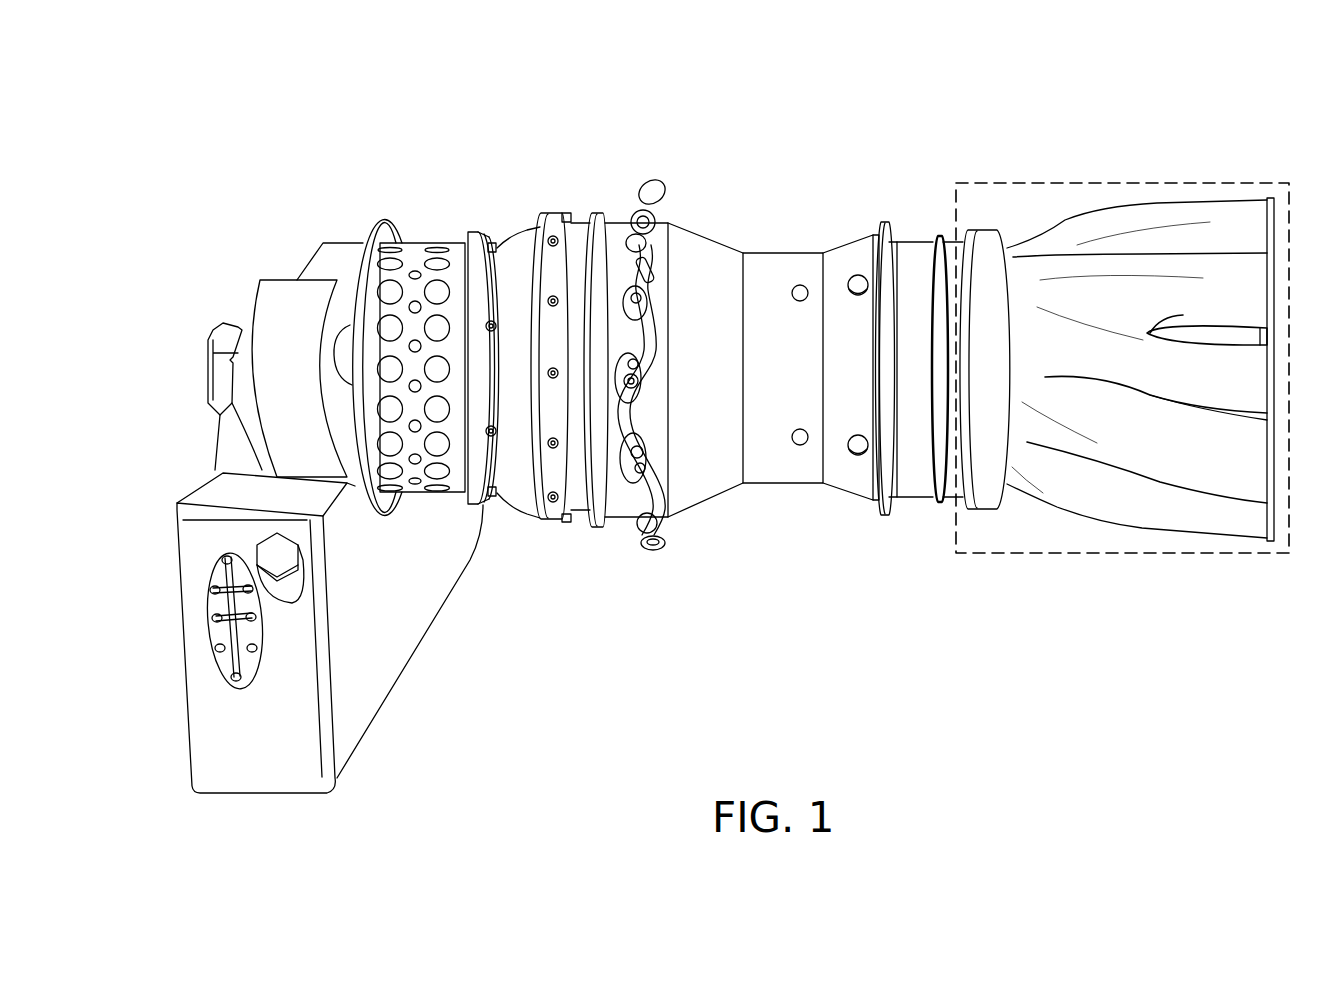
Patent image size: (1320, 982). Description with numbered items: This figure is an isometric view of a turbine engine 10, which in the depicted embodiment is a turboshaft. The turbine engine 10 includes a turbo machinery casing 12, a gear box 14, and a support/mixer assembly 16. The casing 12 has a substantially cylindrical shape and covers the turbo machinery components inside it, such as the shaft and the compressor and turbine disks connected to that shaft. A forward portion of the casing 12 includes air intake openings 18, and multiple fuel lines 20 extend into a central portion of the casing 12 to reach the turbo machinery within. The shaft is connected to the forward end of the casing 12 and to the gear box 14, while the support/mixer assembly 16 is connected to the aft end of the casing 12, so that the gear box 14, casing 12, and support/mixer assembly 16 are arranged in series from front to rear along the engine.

The turbine engine 10 is at (186, 163).
The turbo machinery casing 12 is at (724, 245).
The gear box 14 is at (183, 592).
The support/mixer assembly 16 is at (1052, 555).
The air intake openings 18 is at (400, 248).
The fuel lines 20 is at (650, 348).